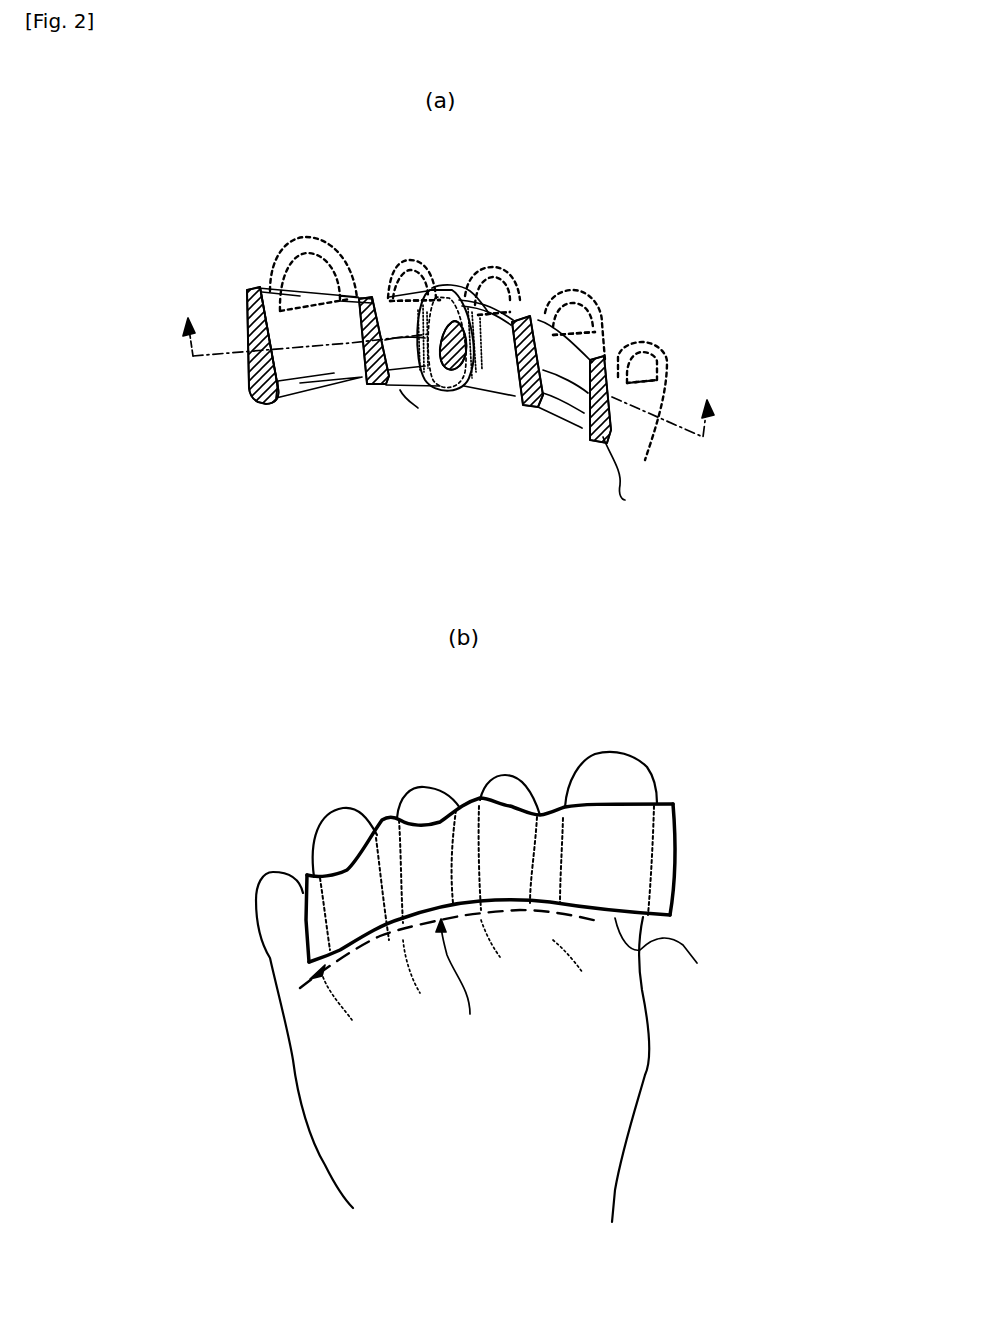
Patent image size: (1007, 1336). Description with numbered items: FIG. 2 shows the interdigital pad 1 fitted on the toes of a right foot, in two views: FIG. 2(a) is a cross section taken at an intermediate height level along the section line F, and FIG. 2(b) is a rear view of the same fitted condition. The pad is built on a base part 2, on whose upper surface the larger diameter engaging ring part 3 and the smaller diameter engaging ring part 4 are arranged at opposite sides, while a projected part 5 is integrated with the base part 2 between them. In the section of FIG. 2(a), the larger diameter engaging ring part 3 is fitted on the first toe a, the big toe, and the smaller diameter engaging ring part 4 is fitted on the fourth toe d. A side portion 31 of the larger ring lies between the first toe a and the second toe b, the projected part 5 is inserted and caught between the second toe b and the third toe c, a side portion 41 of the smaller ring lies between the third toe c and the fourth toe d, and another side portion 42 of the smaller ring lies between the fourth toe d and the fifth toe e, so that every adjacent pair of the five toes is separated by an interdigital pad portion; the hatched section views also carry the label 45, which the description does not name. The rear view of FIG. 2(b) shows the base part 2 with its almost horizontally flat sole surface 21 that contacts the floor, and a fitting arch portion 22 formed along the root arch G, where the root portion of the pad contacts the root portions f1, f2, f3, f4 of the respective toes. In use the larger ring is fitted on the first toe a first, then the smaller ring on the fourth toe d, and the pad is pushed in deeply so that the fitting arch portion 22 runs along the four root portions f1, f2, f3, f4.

The interdigital pad 1 is at (250, 254).
The base part 2 is at (557, 808).
The larger diameter engaging ring part 3 is at (250, 350).
The smaller diameter engaging ring part 4 is at (634, 525).
The projected part 5 is at (395, 490).
The sole surface 21 is at (610, 830).
The fitting arch portion 22 is at (666, 960).
The side portion of larger diameter engaging ring part 31 is at (333, 382).
The side portion of smaller diameter engaging ring part 41 is at (517, 392).
The another side portion of smaller diameter engaging ring part 42 is at (610, 407).
The ring members 45 is at (403, 378).
The first toe a is at (320, 243).
The second toe b is at (415, 300).
The third toe c is at (494, 313).
The fourth toe d is at (574, 333).
The fifth toe e is at (642, 381).
The root portion of toe f1 is at (583, 973).
The root portion of toe f2 is at (507, 958).
The root portion of toe f3 is at (421, 981).
The root portion of toe f4 is at (348, 1013).
The root arch G is at (449, 976).
The section line F is at (447, 355).